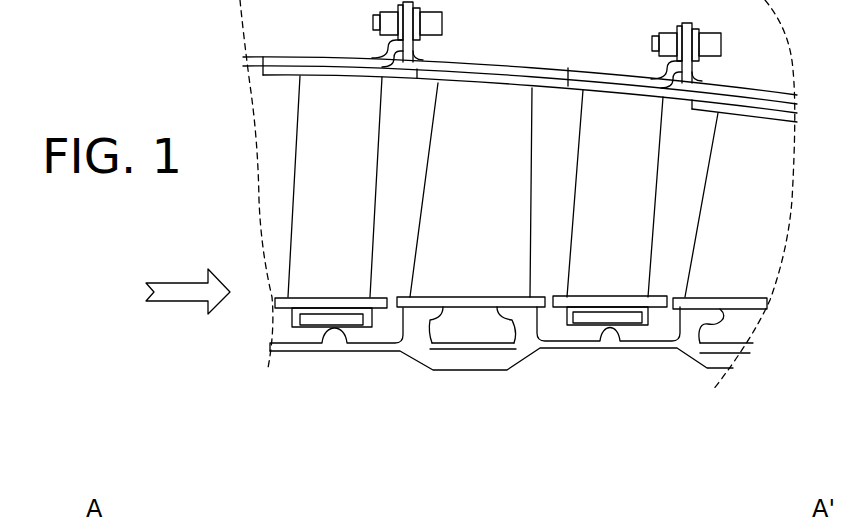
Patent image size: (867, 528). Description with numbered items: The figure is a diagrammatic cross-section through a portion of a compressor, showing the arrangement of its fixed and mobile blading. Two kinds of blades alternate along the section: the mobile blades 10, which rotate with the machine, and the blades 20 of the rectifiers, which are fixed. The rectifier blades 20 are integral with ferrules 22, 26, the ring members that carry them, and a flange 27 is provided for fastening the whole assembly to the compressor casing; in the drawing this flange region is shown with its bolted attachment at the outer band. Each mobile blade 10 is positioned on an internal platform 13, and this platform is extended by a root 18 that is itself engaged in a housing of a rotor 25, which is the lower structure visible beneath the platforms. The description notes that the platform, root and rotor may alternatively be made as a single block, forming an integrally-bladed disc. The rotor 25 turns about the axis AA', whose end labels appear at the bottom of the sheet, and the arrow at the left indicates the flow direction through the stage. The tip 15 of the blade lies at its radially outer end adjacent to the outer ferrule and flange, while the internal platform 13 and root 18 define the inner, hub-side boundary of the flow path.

The mobile blade 10 is at (468, 108).
The internal platform 13 is at (435, 295).
The tip of the blade 15 is at (527, 72).
The root 18 is at (450, 333).
The rectifier blade 20 is at (343, 100).
The ferrule 22 is at (658, 295).
The rotor 25 is at (477, 360).
The ferrule 26 is at (637, 92).
The flange 27 is at (675, 67).